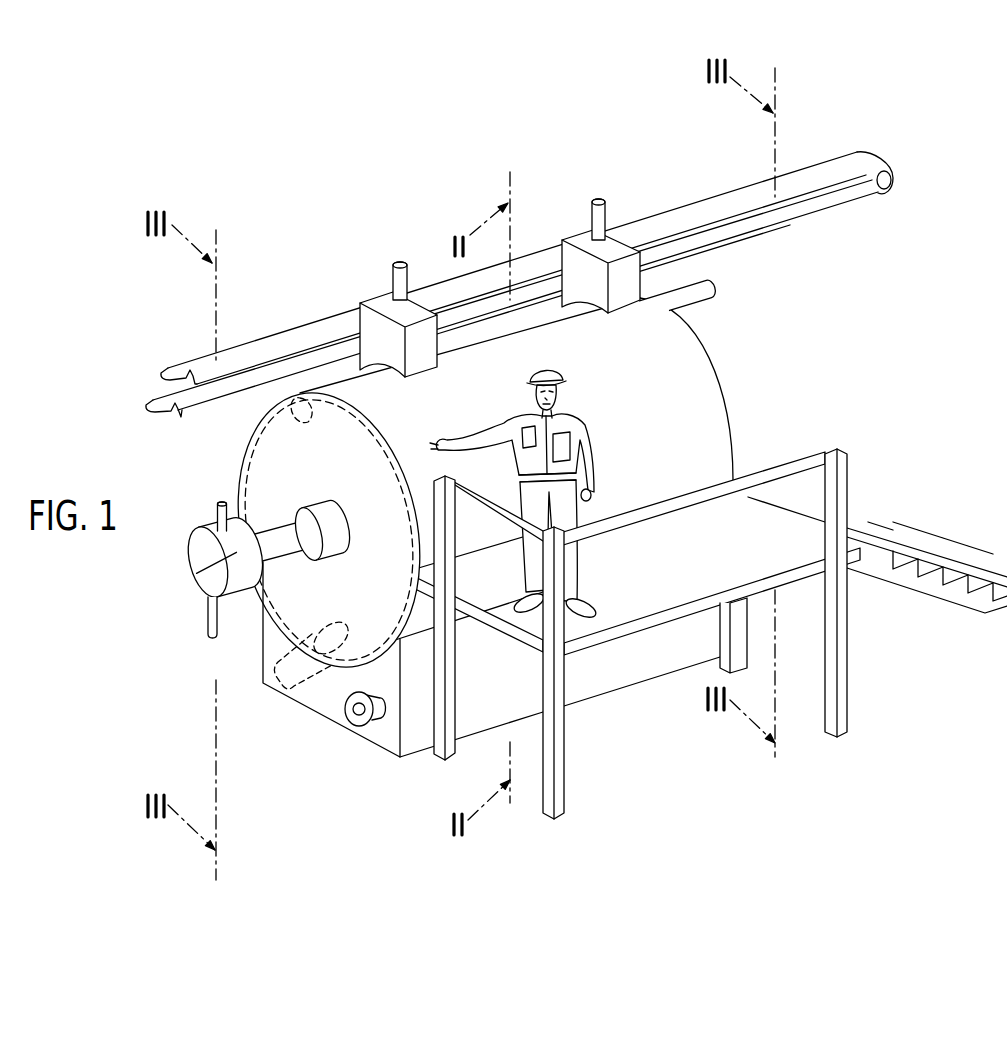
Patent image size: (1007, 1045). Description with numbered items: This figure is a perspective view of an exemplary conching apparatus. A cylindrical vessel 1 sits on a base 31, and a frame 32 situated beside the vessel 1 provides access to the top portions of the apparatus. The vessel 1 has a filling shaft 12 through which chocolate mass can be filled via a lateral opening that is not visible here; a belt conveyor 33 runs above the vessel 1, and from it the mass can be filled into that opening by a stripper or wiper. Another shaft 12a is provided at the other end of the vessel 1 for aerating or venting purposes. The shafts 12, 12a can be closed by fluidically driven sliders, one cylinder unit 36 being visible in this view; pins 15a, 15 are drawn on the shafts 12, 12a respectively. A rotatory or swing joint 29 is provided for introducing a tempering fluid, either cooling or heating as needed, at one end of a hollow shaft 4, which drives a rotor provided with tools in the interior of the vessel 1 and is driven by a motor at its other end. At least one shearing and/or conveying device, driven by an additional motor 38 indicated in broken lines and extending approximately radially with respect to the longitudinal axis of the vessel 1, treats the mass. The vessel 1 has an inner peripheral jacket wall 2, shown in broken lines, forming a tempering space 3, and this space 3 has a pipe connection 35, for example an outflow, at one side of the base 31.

The cylindrical vessel 1 is at (715, 423).
The inner peripheral jacket wall 2 is at (310, 398).
The tempering space 3 is at (262, 405).
The hollow shaft 4 is at (275, 537).
The filling shaft 12 is at (375, 327).
The shaft 12a is at (577, 262).
The pin 15 is at (605, 198).
The pin 15a is at (398, 262).
The rotatory or swing joint 29 is at (200, 586).
The base 31 is at (418, 725).
The frame 32 is at (862, 476).
The belt conveyor 33 is at (885, 193).
The pipe connection 35 is at (348, 713).
The cylinder unit 36 is at (720, 283).
The additional motor 38 is at (272, 690).